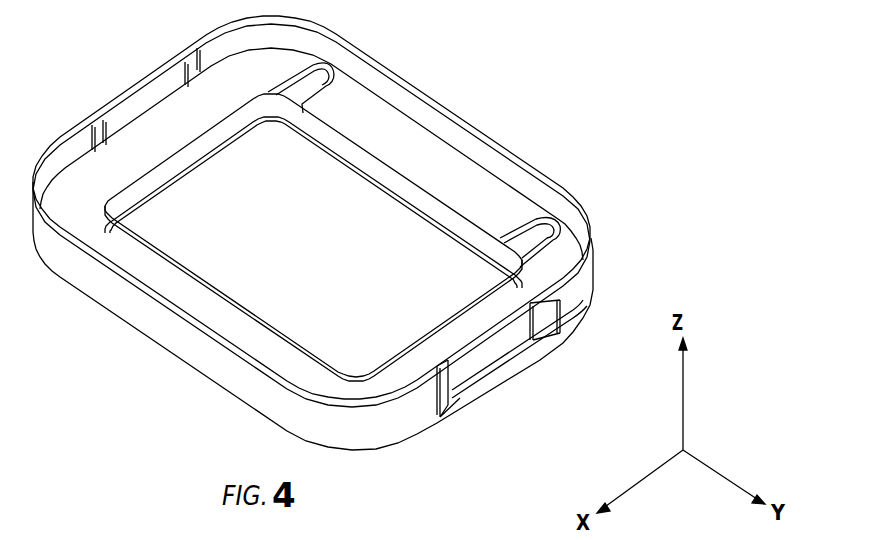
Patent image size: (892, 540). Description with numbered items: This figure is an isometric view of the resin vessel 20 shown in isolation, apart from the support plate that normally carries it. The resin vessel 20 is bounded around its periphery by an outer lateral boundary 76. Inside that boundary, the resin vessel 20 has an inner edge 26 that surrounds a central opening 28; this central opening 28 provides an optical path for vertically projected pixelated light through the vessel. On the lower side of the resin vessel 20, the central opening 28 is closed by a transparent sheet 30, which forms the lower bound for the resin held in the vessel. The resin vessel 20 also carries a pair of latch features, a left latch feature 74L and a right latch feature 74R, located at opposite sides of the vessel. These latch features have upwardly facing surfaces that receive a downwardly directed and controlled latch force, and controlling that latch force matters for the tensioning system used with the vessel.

The resin vessel 20 is at (528, 88).
The inner edge 26 is at (387, 193).
The central opening 28 is at (460, 297).
The transparent sheet 30 is at (185, 213).
The left latch feature 74L is at (134, 88).
The right latch feature 74R is at (505, 362).
The outer lateral boundary 76 is at (165, 336).